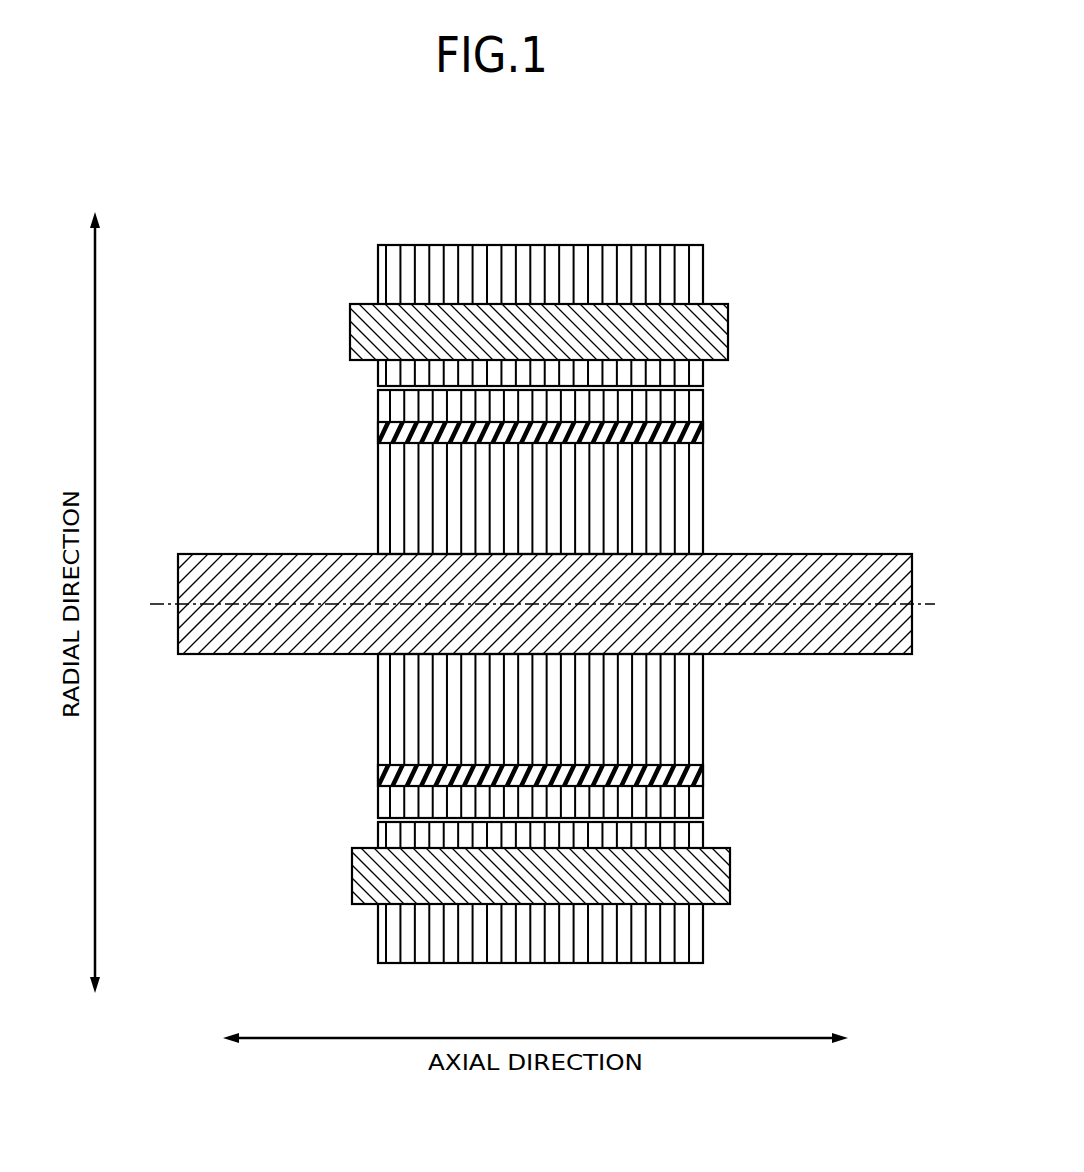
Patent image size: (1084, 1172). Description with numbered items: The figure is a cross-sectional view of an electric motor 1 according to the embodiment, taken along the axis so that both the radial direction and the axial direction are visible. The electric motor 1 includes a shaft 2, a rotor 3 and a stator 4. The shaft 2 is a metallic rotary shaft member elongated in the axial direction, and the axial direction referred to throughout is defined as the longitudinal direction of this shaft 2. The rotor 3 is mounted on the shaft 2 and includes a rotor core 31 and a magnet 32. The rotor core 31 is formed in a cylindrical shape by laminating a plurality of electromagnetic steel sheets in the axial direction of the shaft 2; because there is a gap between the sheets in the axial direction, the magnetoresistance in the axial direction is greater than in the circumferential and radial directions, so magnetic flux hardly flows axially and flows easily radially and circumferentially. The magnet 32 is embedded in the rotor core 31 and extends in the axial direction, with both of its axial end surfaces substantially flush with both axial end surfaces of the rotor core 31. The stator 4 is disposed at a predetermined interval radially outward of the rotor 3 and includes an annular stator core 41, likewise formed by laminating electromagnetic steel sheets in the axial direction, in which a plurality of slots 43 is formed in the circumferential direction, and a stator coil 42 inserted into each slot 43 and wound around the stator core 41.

The electric motor 1 is at (540, 539).
The shaft 2 is at (876, 554).
The rotor 3 is at (595, 604).
The rotor core 31 is at (390, 503).
The magnet 32 is at (381, 431).
The stator 4 is at (537, 556).
The stator core 41 is at (454, 253).
The stator coil 42 is at (653, 303).
The slot 43 is at (568, 296).